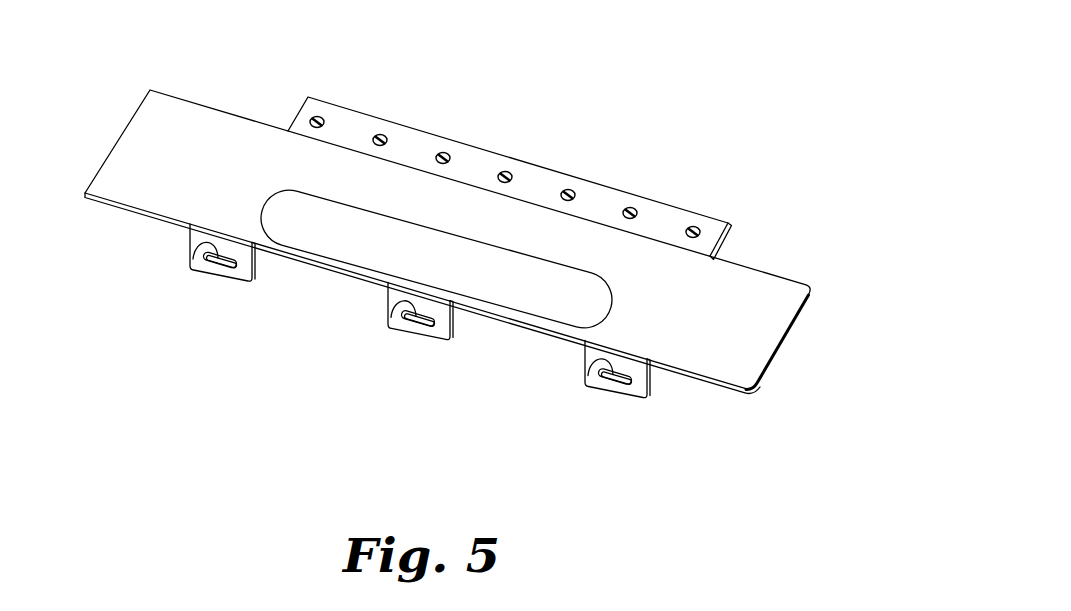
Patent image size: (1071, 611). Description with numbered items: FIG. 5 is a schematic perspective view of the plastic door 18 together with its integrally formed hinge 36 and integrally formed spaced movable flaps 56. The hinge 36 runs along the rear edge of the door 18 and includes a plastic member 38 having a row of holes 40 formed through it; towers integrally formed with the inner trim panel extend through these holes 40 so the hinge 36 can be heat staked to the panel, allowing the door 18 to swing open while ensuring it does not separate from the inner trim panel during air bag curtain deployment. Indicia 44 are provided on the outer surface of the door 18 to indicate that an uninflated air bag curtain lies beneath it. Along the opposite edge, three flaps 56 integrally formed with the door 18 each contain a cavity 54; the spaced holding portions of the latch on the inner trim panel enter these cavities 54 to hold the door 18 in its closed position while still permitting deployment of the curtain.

The door 18 is at (815, 288).
The hinge 36 is at (713, 210).
The plastic member 38 is at (528, 160).
The holes 40 is at (320, 117).
The indicia 44 is at (363, 237).
The cavities 54 is at (192, 258).
The flaps 56 is at (255, 268).